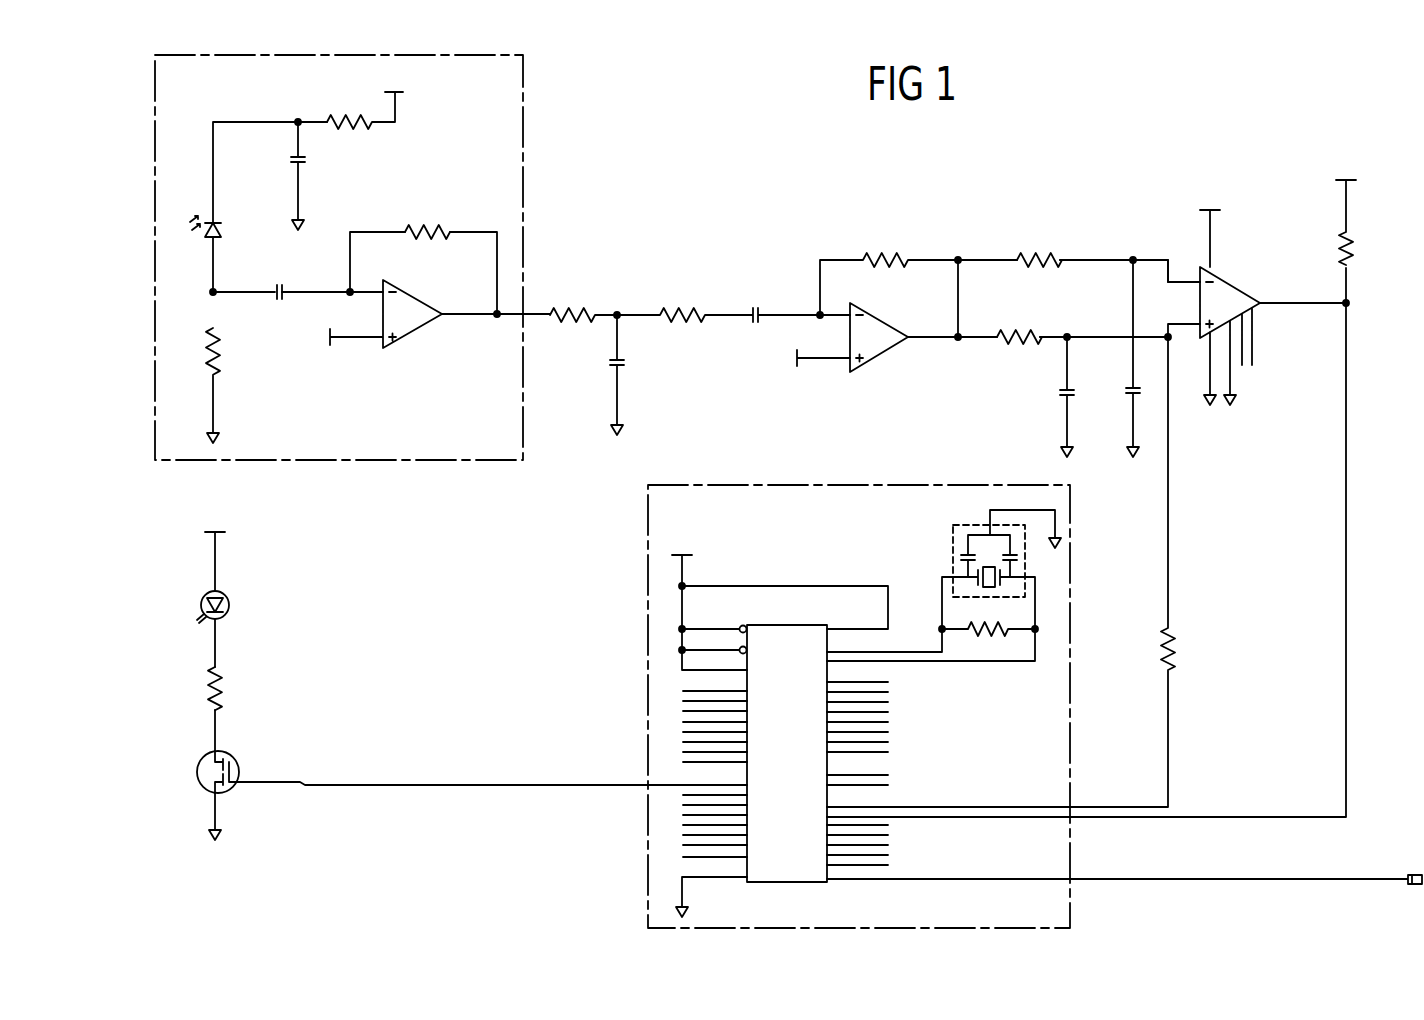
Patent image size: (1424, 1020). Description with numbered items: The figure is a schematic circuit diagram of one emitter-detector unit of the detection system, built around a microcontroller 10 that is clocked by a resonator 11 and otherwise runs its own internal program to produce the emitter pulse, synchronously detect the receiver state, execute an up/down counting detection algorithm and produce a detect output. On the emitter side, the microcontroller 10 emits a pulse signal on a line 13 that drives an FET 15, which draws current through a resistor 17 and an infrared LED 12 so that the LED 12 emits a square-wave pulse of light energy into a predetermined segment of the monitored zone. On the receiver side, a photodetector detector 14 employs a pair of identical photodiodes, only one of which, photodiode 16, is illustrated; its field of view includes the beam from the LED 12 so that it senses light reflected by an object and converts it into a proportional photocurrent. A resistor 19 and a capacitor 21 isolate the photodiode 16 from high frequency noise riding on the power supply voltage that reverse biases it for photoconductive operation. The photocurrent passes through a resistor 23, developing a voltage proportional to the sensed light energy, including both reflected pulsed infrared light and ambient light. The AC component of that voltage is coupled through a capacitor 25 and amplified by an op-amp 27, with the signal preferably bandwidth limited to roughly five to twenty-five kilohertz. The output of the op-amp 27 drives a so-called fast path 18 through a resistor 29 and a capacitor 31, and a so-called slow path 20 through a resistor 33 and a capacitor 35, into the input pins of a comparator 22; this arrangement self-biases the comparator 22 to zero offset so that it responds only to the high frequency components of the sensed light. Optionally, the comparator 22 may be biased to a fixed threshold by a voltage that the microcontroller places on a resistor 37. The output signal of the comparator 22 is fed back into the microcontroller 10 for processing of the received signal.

The microcontroller 10 is at (633, 653).
The resonator 11 is at (970, 480).
The infrared LED 12 is at (230, 600).
The line 13 is at (567, 785).
The photodetector detector 14 is at (525, 123).
The FET 15 is at (238, 762).
The photodiode 16 is at (221, 232).
The resistor 17 is at (220, 685).
The fast path 18 is at (1072, 328).
The resistor 19 is at (367, 124).
The slow path 20 is at (1095, 248).
The capacitor 21 is at (303, 162).
The comparator 22 is at (1240, 300).
The resistor 23 is at (218, 366).
The capacitor 25 is at (284, 290).
The op-amp 27 is at (878, 352).
The resistor 29 is at (1000, 345).
The capacitor 31 is at (1060, 388).
The resistor 33 is at (1022, 266).
The capacitor 35 is at (1128, 396).
The resistor 37 is at (1172, 642).